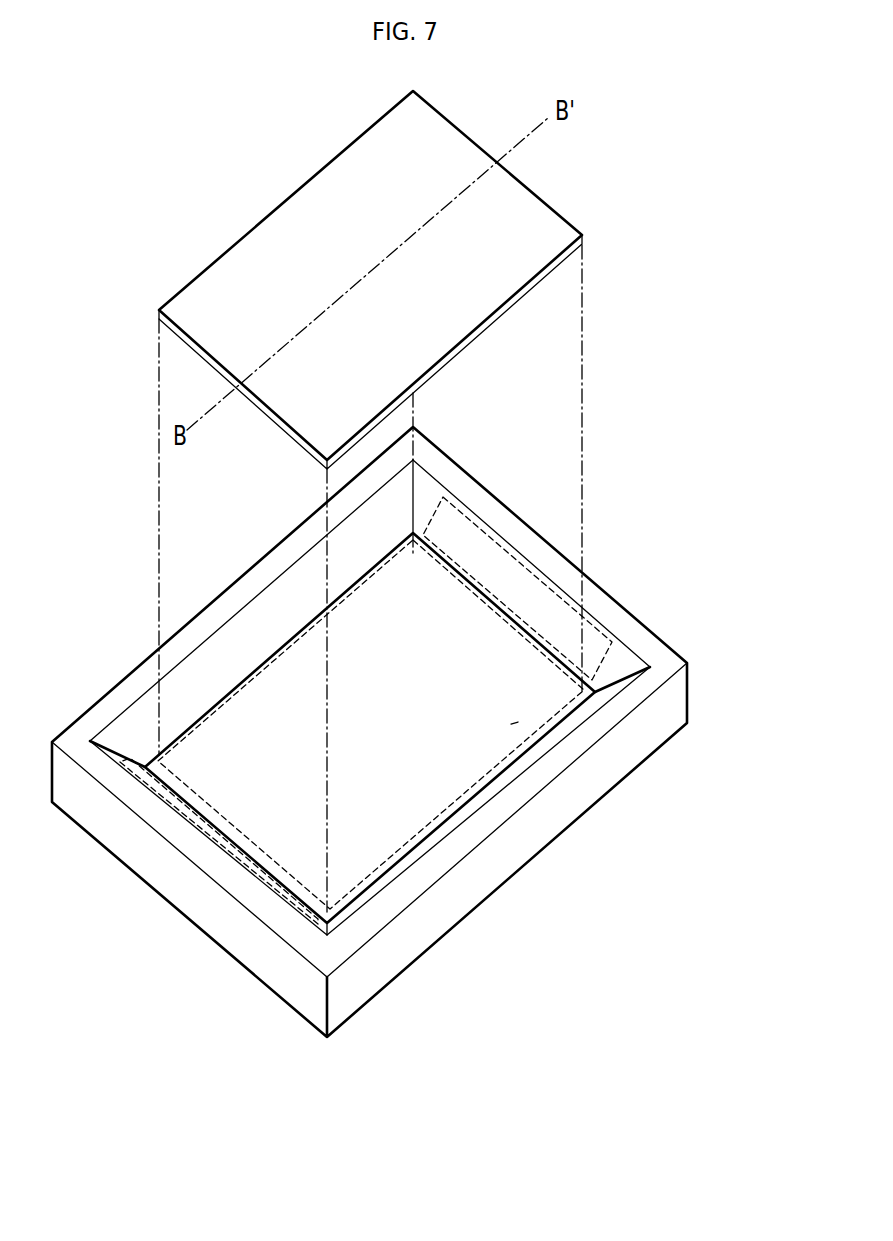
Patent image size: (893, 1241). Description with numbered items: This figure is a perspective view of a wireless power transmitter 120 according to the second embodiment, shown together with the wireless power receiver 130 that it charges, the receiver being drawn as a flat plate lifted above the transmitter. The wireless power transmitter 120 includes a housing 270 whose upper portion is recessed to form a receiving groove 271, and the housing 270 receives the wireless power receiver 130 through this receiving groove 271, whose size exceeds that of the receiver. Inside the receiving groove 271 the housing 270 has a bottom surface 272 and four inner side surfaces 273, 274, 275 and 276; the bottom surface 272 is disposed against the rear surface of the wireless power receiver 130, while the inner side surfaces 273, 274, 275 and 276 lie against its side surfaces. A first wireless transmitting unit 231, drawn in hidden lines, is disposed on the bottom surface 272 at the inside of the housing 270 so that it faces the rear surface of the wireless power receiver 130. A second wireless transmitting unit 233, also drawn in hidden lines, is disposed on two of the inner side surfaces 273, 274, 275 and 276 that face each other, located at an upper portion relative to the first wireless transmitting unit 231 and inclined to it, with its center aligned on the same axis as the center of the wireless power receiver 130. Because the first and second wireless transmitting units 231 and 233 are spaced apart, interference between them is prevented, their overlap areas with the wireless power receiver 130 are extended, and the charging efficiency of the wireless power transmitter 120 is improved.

The wireless power transmitter 120 is at (617, 565).
The wireless power receiver 130 is at (298, 207).
The first wireless transmitting unit 231 is at (488, 775).
The second wireless transmitting unit 233 is at (490, 525).
The housing 270 is at (683, 702).
The receiving groove 271 is at (518, 722).
The bottom surface 272 is at (402, 820).
The inner side surface 273 is at (623, 665).
The inner side surface 274 is at (253, 620).
The inner side surface 275 is at (312, 923).
The inner side surface 276 is at (575, 727).